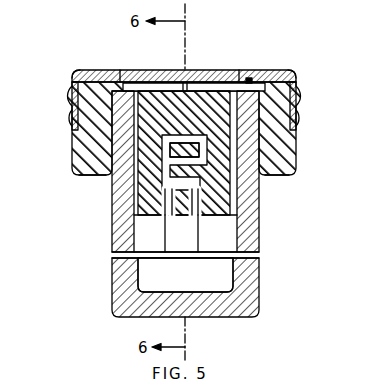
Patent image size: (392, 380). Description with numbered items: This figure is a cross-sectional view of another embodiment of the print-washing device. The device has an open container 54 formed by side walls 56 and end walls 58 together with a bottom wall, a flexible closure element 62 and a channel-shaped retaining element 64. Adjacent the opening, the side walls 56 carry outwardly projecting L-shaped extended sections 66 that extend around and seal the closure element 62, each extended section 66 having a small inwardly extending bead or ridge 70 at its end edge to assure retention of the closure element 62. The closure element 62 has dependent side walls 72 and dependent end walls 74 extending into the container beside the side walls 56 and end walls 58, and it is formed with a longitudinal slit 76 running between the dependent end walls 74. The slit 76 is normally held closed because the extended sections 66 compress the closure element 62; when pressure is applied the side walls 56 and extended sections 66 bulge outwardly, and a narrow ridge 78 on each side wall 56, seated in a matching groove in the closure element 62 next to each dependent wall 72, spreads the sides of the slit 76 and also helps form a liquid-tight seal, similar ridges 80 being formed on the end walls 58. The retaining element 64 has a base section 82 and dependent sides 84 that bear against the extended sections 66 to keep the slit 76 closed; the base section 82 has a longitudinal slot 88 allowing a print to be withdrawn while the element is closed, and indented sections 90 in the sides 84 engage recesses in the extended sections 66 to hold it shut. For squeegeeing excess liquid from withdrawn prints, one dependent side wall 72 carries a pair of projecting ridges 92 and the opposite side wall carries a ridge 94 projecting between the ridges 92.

The open container 54 is at (260, 280).
The side walls 56 is at (113, 269).
The end walls 58 is at (170, 284).
The flexible closure element 62 is at (172, 83).
The channel-shaped retaining element 64 is at (76, 62).
The L-shaped extended sections 66 is at (82, 175).
The bead or ridge 70 is at (84, 70).
The dependent side walls 72 is at (133, 219).
The dependent end walls 74 is at (187, 200).
The longitudinal slit 76 is at (209, 72).
The narrow ridge 78 is at (124, 72).
The ridges 80 is at (0, 376).
The base section 82 is at (250, 80).
The dependent sides 84 is at (67, 81).
The longitudinal slot 88 is at (187, 83).
The indented sections 90 is at (72, 121).
The projecting ridges or flanges 92 is at (172, 218).
The ridge or flange 94 is at (195, 217).